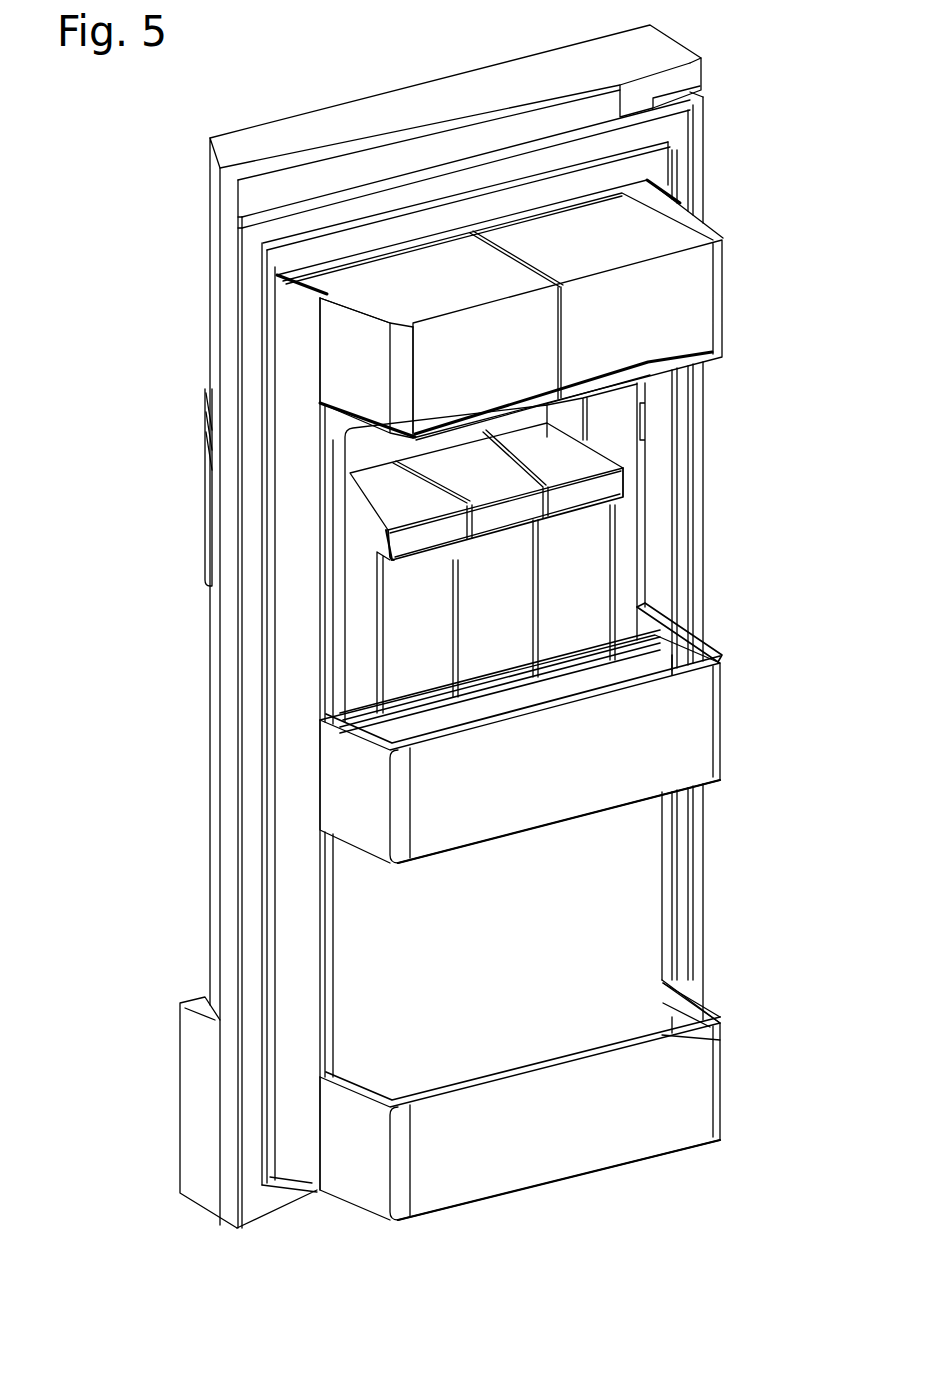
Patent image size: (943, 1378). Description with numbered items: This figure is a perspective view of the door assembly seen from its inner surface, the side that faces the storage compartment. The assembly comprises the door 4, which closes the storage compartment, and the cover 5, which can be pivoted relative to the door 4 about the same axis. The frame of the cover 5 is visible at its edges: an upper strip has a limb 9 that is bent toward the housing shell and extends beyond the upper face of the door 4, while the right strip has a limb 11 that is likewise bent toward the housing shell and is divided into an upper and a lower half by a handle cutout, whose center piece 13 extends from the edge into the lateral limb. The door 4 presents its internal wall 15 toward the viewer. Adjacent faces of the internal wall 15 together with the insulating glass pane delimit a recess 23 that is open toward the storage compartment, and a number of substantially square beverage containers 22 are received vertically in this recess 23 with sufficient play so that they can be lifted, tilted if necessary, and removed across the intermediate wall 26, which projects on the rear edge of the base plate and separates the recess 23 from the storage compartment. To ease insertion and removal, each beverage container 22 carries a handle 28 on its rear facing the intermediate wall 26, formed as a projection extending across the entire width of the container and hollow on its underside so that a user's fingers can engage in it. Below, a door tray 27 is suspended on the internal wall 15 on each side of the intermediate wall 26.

The door 4 is at (225, 322).
The cover 5 is at (206, 240).
The limb 9 is at (346, 118).
The limb 11 is at (212, 375).
The center piece 13 is at (208, 612).
The internal wall 15 is at (627, 553).
The beverage containers 22 is at (560, 630).
The recess 23 is at (487, 432).
The intermediate wall 26 is at (690, 655).
The door tray 27 is at (693, 748).
The handle 28 is at (408, 537).